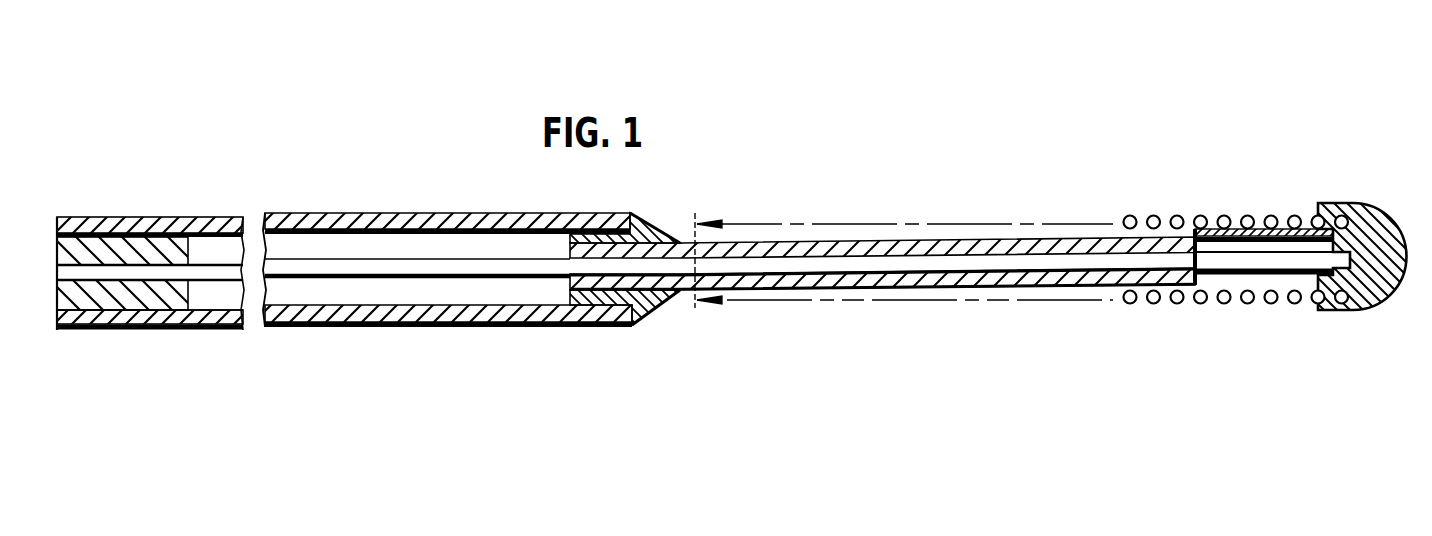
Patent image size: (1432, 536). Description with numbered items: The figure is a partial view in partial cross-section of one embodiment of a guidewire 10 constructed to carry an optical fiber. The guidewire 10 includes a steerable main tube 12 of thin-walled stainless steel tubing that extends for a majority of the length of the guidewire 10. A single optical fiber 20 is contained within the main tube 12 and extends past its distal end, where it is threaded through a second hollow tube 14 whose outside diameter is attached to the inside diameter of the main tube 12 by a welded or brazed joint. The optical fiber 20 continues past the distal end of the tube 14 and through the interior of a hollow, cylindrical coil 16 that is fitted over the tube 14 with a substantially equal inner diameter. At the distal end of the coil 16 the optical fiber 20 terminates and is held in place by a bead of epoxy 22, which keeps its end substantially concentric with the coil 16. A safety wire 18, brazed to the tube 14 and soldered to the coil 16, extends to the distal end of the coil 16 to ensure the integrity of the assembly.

The guidewire 10 is at (795, 92).
The main tube 12 is at (220, 225).
The second hollow tube 14 is at (809, 282).
The coil 16 is at (1225, 304).
The safety wire 18 is at (1262, 232).
The optical fiber 20 is at (417, 270).
The bead of epoxy 22 is at (1390, 228).